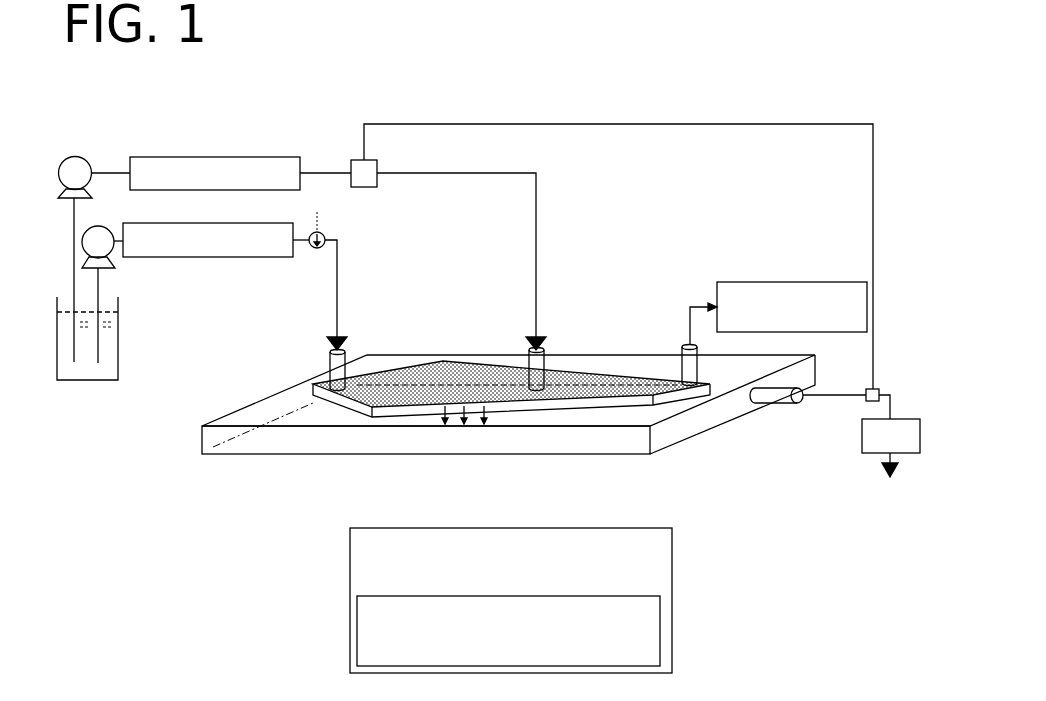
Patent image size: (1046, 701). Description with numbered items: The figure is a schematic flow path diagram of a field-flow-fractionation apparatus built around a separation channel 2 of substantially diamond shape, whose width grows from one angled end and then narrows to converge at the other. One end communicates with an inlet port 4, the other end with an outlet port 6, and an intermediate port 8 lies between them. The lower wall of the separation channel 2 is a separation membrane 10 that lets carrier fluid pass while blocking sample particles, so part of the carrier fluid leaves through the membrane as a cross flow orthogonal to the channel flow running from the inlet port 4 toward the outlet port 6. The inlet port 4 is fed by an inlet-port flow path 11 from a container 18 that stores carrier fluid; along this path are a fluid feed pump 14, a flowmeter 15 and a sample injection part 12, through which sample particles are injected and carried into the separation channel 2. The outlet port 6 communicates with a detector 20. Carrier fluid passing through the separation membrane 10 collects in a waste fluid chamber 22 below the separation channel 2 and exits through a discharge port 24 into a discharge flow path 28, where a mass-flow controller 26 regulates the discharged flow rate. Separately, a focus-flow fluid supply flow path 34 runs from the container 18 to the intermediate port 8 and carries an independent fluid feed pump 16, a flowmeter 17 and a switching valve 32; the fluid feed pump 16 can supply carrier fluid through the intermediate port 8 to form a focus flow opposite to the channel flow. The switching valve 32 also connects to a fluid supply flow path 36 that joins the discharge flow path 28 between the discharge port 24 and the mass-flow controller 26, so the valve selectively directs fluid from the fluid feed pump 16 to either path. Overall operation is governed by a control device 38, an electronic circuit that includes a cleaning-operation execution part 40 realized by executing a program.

The separation channel 2 is at (600, 372).
The inlet port 4 is at (337, 363).
The outlet port 6 is at (688, 362).
The intermediate port 8 is at (540, 372).
The separation membrane 10 is at (425, 357).
The inlet-port flow path 11 is at (338, 282).
The sample injection part 12 is at (325, 238).
The fluid feed pump 14 is at (115, 257).
The flowmeter 15 is at (248, 258).
The fluid feed pump 16 is at (85, 158).
The flowmeter 17 is at (273, 157).
The container 18 is at (118, 329).
The detector 20 is at (825, 278).
The waste fluid chamber 22 is at (330, 415).
The discharge port 24 is at (777, 397).
The mass-flow controller 26 is at (913, 418).
The discharge flow path 28 is at (882, 392).
The switching valve 32 is at (377, 187).
The focus-flow fluid supply flow path 34 is at (538, 218).
The fluid supply flow path 36 is at (717, 123).
The control device 38 is at (672, 542).
The cleaning-operation execution part 40 is at (660, 618).